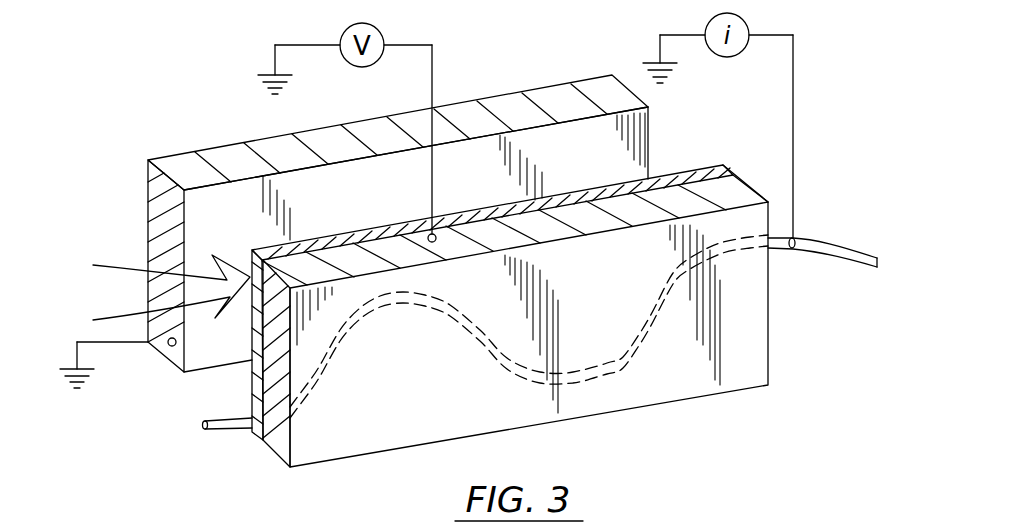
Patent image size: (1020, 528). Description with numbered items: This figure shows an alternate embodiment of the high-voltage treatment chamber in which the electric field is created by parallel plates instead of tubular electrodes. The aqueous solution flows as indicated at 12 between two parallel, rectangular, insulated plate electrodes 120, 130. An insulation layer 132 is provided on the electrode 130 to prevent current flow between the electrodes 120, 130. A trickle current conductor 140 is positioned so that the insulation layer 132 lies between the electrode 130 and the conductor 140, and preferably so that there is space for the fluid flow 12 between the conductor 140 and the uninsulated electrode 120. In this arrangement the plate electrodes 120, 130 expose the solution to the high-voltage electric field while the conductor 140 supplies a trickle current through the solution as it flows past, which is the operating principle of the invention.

The fluid flow 12 is at (115, 265).
The plate electrode 120 is at (148, 182).
The plate electrode 130 is at (310, 467).
The insulation layer 132 is at (678, 175).
The trickle current conductor 140 is at (203, 424).